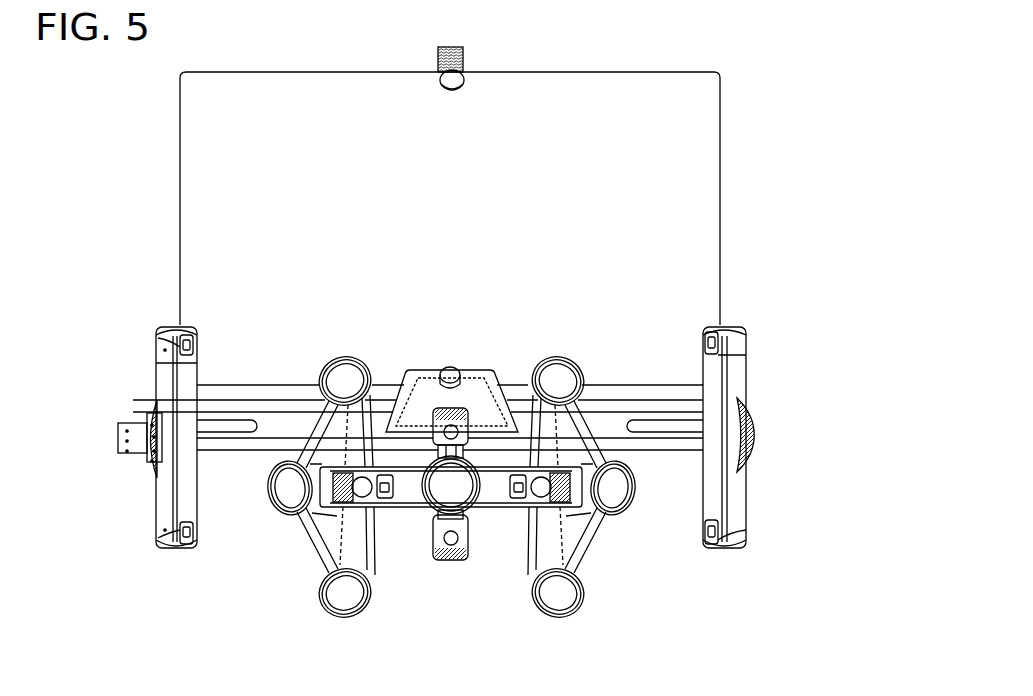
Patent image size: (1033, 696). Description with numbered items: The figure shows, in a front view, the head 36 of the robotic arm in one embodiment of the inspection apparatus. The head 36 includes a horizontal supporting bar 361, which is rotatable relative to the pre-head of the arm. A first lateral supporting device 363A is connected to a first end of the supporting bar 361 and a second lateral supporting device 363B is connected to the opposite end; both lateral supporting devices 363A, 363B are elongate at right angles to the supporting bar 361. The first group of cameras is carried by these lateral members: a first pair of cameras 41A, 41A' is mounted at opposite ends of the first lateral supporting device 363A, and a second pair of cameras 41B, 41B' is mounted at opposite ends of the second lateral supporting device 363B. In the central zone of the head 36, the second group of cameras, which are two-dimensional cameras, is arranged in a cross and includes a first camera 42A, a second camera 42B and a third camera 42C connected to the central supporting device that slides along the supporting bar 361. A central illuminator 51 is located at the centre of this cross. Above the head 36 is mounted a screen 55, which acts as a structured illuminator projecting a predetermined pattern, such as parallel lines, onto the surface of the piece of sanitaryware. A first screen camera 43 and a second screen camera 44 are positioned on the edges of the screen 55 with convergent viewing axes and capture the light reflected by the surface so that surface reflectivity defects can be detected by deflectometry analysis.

The head 36 is at (429, 567).
The first camera of the first group 41A is at (125, 545).
The first pair camera of the first group 41A' is at (124, 353).
The second camera of the first group 41B is at (740, 570).
The second pair camera of the first group 41B' is at (755, 293).
The first camera of the second group 42A is at (368, 510).
The second camera of the second group 42B is at (550, 508).
The third camera of the second group 42C is at (447, 545).
The first screen camera 43 is at (459, 86).
The second screen camera 44 is at (450, 370).
The central illuminator 51 is at (452, 490).
The screen 55 is at (678, 118).
The supporting bar 361 is at (265, 422).
The first lateral supporting device 363A is at (166, 490).
The second lateral supporting device 363B is at (735, 367).